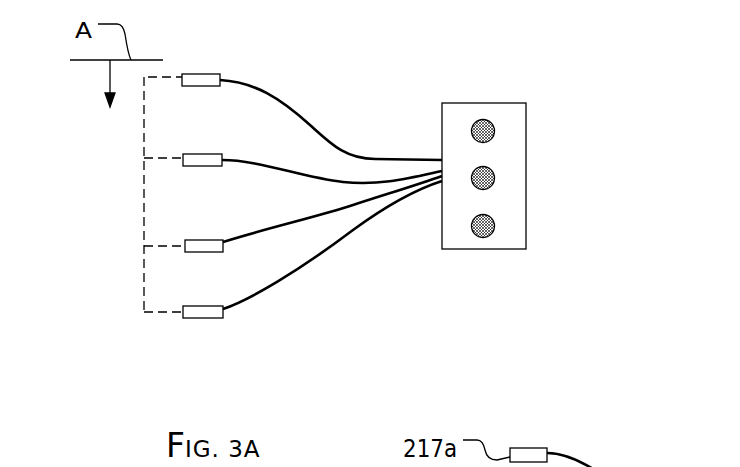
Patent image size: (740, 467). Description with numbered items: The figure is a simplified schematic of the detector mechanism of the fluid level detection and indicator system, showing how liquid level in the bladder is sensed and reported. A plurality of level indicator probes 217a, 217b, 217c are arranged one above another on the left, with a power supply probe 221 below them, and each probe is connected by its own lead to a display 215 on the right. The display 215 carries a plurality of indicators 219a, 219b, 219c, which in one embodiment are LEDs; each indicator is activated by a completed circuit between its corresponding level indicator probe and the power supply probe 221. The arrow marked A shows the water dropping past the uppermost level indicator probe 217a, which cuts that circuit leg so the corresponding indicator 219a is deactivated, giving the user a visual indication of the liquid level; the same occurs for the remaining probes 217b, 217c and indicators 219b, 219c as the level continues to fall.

The display 215 is at (466, 103).
The level indicator probe 217a is at (182, 84).
The level indicator probe 217b is at (183, 165).
The level indicator probe 217c is at (185, 251).
The indicator 219a is at (495, 131).
The indicator 219b is at (495, 178).
The indicator 219c is at (495, 226).
The power supply probe 221 is at (203, 318).